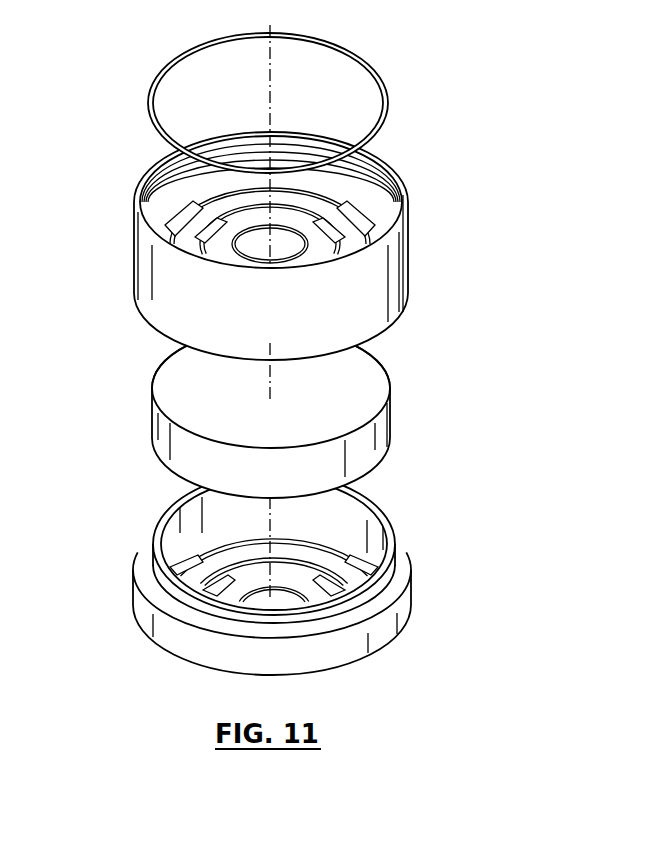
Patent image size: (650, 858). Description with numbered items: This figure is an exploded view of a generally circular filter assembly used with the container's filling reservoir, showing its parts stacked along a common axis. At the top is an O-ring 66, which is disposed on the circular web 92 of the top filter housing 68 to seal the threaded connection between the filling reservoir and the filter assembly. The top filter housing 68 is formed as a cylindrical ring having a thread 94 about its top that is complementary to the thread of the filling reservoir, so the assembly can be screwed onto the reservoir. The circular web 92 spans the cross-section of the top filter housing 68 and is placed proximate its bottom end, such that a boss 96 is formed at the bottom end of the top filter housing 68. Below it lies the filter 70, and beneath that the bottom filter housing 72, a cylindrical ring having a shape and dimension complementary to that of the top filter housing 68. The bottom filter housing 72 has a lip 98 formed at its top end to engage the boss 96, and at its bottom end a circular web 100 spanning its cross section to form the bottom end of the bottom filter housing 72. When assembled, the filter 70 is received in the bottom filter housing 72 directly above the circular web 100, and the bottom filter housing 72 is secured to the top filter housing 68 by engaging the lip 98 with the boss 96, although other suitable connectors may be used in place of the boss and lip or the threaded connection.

The O-ring 66 is at (365, 60).
The top filter housing 68 is at (411, 258).
The filter 70 is at (391, 424).
The bottom filter housing 72 is at (401, 562).
The circular web 92 is at (160, 213).
The thread 94 is at (373, 178).
The boss 96 is at (404, 580).
The lip 98 is at (394, 294).
The circular web 100 is at (187, 553).